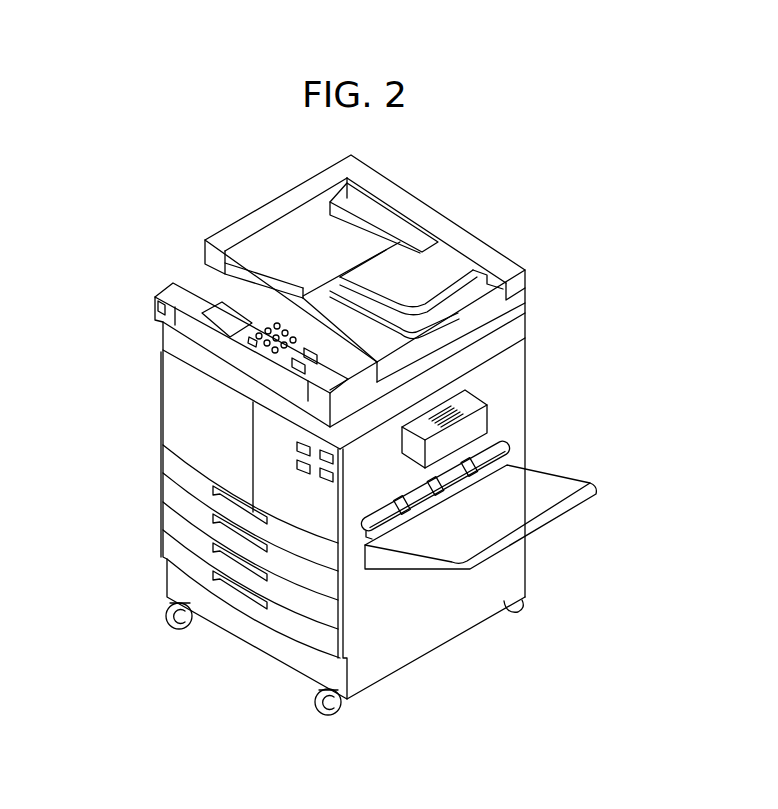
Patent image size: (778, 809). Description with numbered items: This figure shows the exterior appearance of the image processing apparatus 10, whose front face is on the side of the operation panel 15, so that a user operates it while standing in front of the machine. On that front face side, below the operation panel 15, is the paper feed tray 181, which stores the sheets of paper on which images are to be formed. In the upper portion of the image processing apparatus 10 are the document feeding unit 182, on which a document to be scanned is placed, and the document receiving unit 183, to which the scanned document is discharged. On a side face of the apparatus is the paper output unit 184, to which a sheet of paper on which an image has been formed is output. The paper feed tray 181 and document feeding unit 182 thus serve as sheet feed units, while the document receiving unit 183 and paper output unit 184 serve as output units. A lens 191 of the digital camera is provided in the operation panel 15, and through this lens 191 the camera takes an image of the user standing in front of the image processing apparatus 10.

The image processing apparatus 10 is at (168, 236).
The operation panel 15 is at (203, 345).
The paper feed tray 181 is at (146, 499).
The document feeding unit 182 is at (337, 247).
The document receiving unit 183 is at (363, 322).
The paper output unit 184 is at (520, 497).
The lens 191 is at (252, 342).